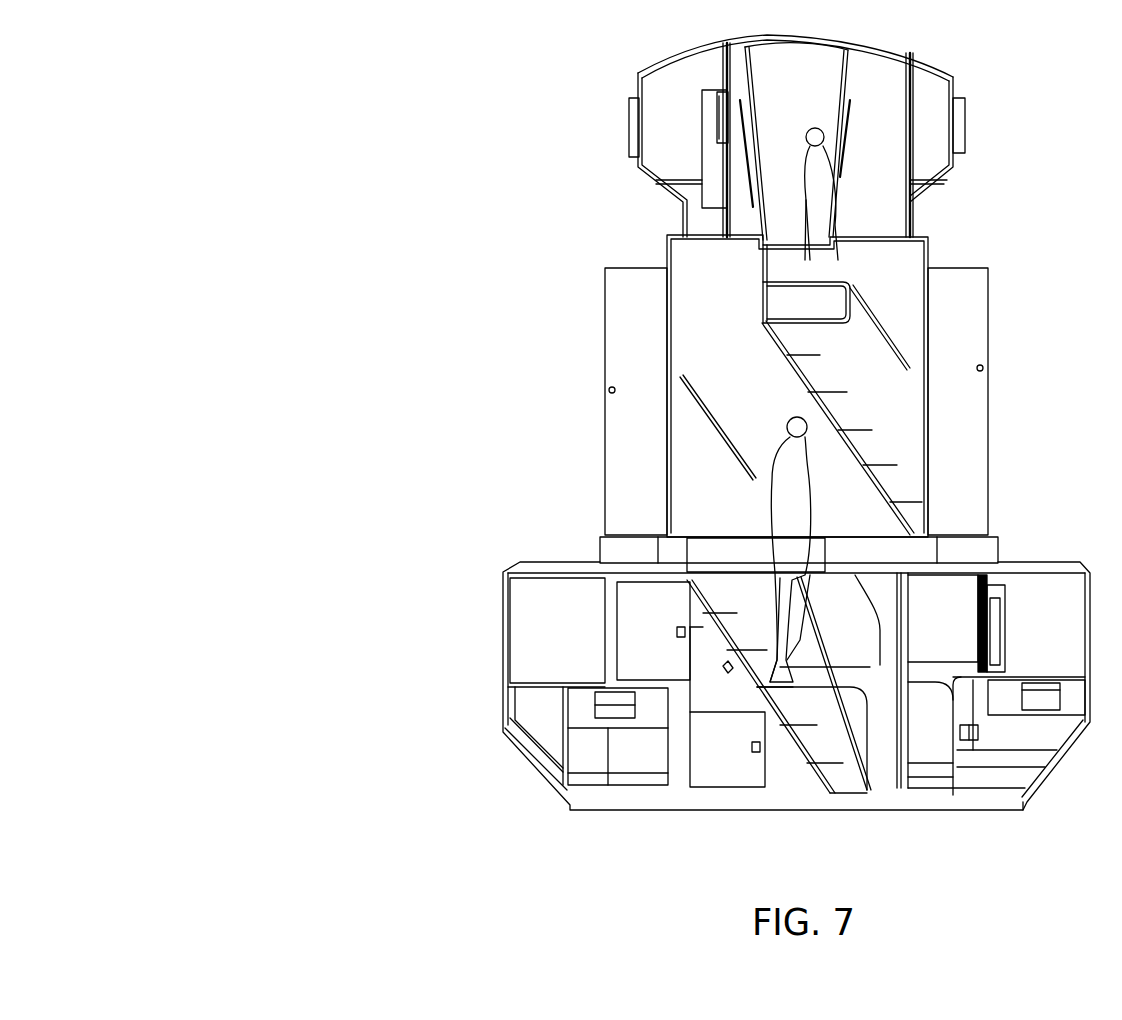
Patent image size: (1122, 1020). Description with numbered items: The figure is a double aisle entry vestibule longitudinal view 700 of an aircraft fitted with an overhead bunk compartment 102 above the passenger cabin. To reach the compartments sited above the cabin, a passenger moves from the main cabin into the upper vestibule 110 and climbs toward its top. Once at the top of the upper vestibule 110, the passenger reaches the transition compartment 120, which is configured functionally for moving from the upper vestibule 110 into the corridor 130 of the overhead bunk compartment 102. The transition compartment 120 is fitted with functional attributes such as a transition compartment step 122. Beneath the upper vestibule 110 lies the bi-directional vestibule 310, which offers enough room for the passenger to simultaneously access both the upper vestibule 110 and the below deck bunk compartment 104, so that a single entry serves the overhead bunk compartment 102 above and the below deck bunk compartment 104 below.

The double aisle entry vestibule longitudinal view 700 is at (183, 133).
The overhead bunk compartment 102 is at (661, 134).
The corridor 130 is at (785, 67).
The transition compartment 120 is at (883, 110).
The transition compartment step 122 is at (792, 308).
The upper vestibule 110 is at (898, 275).
The bi-directional vestibule 310 is at (845, 492).
The below deck bunk compartment 104 is at (538, 615).